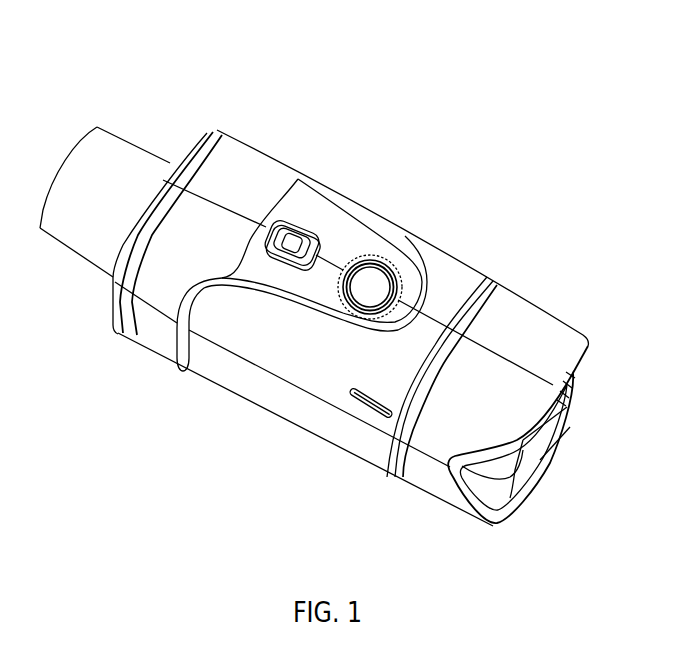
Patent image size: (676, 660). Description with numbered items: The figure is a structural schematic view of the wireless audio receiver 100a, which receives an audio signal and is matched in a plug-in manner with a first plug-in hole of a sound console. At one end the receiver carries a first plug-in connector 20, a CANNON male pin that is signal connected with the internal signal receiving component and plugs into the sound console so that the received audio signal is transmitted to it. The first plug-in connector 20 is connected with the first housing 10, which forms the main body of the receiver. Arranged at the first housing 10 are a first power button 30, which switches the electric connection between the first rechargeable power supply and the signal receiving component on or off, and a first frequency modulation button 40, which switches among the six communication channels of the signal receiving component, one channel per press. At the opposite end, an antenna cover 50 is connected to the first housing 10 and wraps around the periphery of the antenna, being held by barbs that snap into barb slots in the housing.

The wireless audio receiver 100a is at (503, 45).
The first housing 10 is at (222, 370).
The first plug-in connector 20 is at (72, 225).
The first power button 30 is at (303, 232).
The first frequency modulation button 40 is at (373, 285).
The antenna cover 50 is at (523, 343).